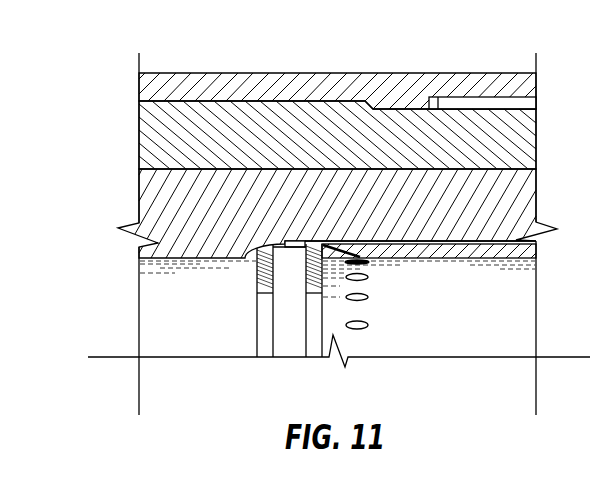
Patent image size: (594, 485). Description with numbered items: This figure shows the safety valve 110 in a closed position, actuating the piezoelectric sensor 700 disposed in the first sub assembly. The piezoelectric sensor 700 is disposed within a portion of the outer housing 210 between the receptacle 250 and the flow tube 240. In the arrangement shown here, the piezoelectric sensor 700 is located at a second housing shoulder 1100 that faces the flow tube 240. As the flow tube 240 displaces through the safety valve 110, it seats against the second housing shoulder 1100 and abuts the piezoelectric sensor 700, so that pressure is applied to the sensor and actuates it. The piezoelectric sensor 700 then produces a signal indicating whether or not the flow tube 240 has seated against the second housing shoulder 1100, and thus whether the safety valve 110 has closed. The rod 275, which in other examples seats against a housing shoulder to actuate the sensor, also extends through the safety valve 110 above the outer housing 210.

The safety valve 110 is at (127, 46).
The receptacle 250 is at (184, 101).
The rod 275 is at (157, 132).
The outer housing 210 is at (158, 212).
The piezoelectric sensor 700 is at (291, 234).
The second housing shoulder 1100 is at (270, 250).
The flow tube 240 is at (431, 348).